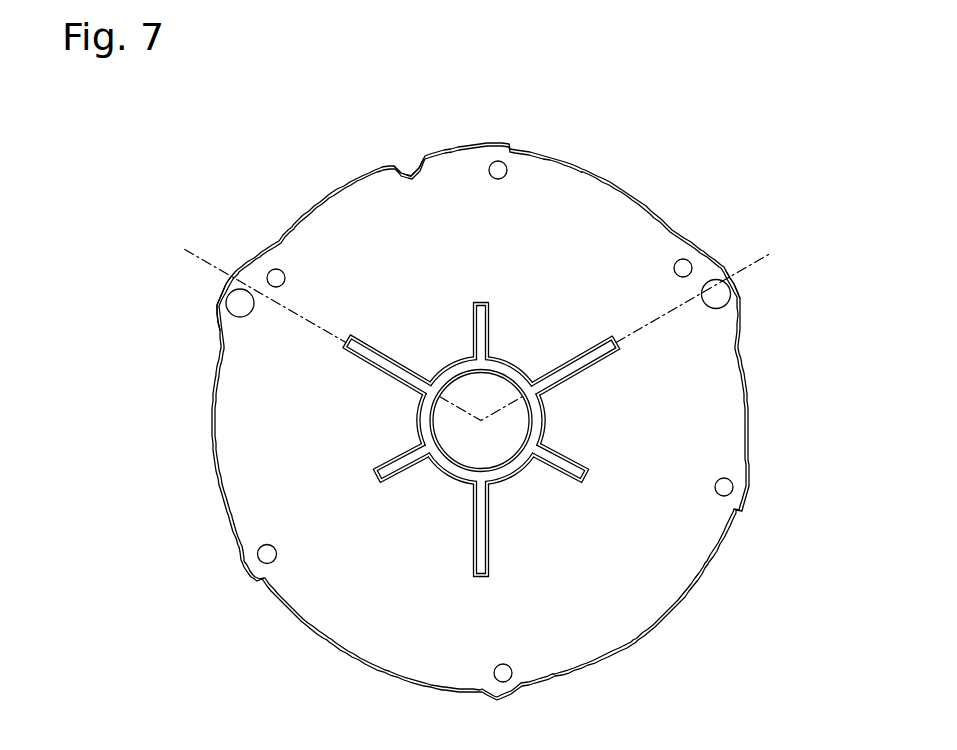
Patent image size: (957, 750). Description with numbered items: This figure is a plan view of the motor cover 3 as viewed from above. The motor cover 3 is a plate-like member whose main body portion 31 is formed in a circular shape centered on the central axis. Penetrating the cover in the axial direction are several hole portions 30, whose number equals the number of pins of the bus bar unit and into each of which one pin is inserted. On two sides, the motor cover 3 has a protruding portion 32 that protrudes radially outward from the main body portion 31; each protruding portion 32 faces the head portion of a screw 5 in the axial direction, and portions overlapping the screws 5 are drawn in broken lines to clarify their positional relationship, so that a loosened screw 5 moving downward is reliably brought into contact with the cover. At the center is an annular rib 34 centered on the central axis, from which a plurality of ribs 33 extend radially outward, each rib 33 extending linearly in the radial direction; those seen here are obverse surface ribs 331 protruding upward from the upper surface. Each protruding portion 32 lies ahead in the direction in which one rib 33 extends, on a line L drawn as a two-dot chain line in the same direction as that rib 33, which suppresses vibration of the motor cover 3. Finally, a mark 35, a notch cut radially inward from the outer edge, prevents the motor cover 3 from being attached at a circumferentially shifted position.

The motor cover 3 is at (655, 140).
The screw 5 is at (230, 313).
The hole portion 30 is at (498, 168).
The main body portion 31 is at (415, 322).
The protruding portion 32 is at (226, 302).
The rib 33 is at (478, 415).
The obverse surface rib 331 is at (490, 330).
The annular rib 34 is at (437, 477).
The mark 35 is at (412, 172).
The line extending in the same direction as the rib L is at (478, 326).